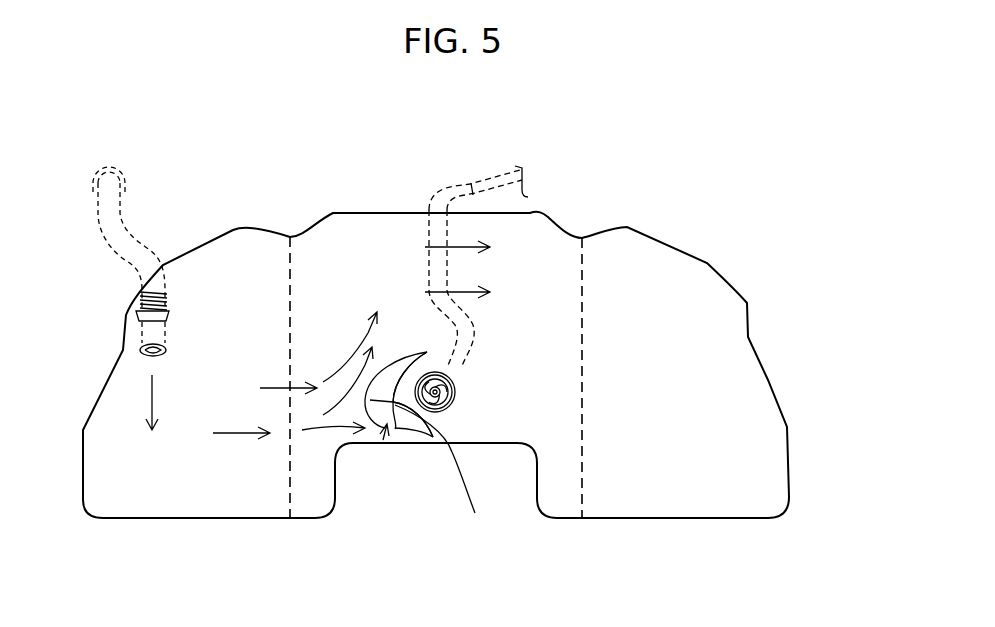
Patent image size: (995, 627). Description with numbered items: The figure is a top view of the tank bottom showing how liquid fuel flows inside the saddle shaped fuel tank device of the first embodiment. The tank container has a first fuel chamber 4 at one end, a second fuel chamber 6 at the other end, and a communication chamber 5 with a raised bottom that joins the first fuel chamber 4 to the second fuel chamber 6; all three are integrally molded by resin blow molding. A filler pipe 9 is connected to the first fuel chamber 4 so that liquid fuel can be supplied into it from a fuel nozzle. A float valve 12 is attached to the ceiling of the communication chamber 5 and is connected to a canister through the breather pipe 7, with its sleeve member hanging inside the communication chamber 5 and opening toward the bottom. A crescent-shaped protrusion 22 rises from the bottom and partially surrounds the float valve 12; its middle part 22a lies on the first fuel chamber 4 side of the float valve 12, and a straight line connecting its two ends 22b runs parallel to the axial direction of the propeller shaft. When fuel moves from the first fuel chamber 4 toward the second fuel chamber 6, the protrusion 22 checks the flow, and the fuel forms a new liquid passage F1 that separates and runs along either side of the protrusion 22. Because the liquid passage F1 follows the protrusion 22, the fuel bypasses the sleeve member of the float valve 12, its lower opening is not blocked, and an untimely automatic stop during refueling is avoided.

The first fuel chamber 4 is at (127, 505).
The communication chamber 5 is at (495, 423).
The second fuel chamber 6 is at (742, 502).
The breather pipe 7 is at (435, 236).
The filler pipe 9 is at (102, 208).
The float valve 12 is at (462, 397).
The protrusion 22 is at (387, 434).
The middle part 22a is at (454, 470).
The ends 22b is at (430, 352).
The liquid passage F1 is at (363, 350).